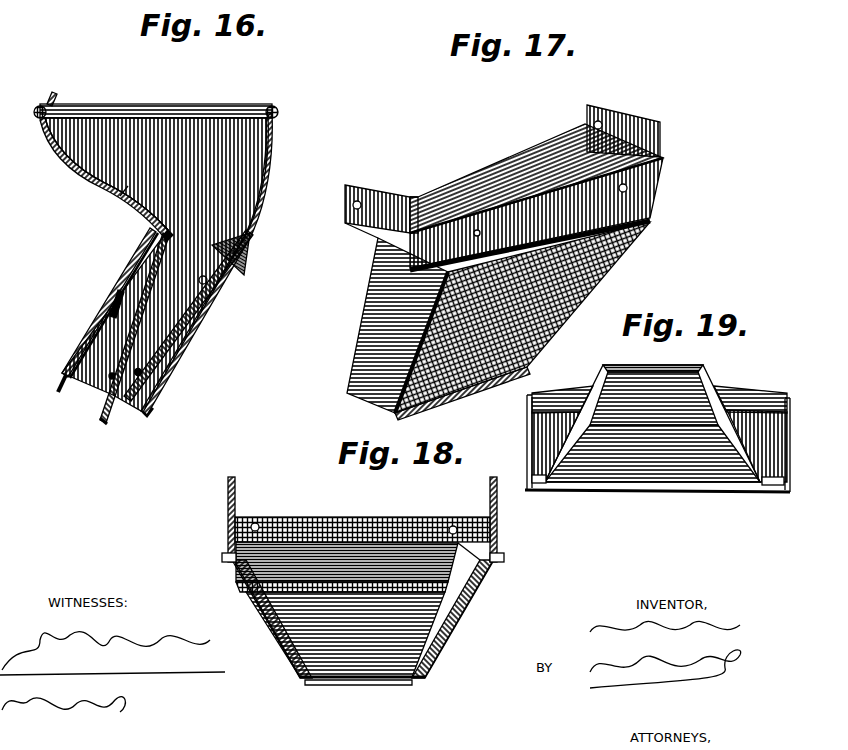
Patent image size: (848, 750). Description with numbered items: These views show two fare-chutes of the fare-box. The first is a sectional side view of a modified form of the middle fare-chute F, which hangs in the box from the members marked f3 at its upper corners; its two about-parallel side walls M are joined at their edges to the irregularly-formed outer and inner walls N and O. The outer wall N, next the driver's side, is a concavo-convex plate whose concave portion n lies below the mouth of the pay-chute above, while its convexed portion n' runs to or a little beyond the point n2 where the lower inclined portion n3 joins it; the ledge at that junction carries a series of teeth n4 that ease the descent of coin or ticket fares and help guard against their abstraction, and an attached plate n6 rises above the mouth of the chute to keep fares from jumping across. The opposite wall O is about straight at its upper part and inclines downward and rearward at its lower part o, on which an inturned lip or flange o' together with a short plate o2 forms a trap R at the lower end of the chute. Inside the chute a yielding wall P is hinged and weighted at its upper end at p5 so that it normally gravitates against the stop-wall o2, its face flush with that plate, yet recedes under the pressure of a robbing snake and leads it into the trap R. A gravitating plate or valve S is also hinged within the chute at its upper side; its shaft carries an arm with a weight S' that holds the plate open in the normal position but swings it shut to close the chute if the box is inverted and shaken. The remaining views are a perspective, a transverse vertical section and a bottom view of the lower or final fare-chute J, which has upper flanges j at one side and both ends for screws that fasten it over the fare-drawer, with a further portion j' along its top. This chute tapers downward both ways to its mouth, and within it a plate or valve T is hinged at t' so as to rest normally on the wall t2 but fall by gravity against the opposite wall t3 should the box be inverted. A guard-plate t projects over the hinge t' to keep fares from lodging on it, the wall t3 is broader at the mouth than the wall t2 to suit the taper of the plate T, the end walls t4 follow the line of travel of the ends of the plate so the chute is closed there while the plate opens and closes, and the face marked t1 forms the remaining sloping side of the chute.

In FIG. 16, the fare-chute F is at (156, 96).
In FIG. 16, the pivot pins of frame f3 is at (280, 110).
In FIG. 16, the attached plate n6 is at (56, 87).
In FIG. 16, the concave portion n is at (104, 177).
In FIG. 16, the convexed portion n' is at (138, 206).
In FIG. 16, the outer wall N is at (112, 202).
In FIG. 16, the point of junction n2 is at (158, 222).
In FIG. 16, the teeth n4 is at (180, 227).
In FIG. 16, the side walls M is at (156, 265).
In FIG. 16, the inner wall O is at (271, 162).
In FIG. 16, the weight p5 is at (247, 258).
In FIG. 16, the weight S' is at (101, 310).
In FIG. 16, the lower inclined portion n3 is at (108, 298).
In FIG. 16, the gravitating plate or valve S is at (134, 328).
In FIG. 16, the yielding wall P is at (180, 370).
In FIG. 16, the lower inclined part o is at (171, 331).
In FIG. 16, the short plate o2 is at (109, 377).
In FIG. 16, the trap R is at (150, 410).
In FIG. 16, the inturned lip or flange o' is at (115, 428).
In FIG. 17, the lower fare-chute J is at (536, 186).
In FIG. 19, the lower fare-chute J is at (657, 425).
In FIG. 18, the lower fare-chute J is at (363, 586).
In FIG. 17, the upper flanges j is at (496, 170).
In FIG. 19, the upper flanges j is at (645, 445).
In FIG. 18, the upper flanges j is at (357, 519).
In FIG. 17, the top cover plate j' is at (536, 178).
In FIG. 19, the top cover plate j' is at (659, 386).
In FIG. 18, the top cover plate j' is at (362, 517).
In FIG. 17, the hinge t' is at (497, 248).
In FIG. 19, the hinge t' is at (646, 495).
In FIG. 18, the hinge t' is at (362, 551).
In FIG. 17, the left funnel side t1 is at (397, 325).
In FIG. 17, the side or wall t2 is at (522, 317).
In FIG. 19, the side or wall t2 is at (652, 453).
In FIG. 17, the plate or valve T is at (452, 400).
In FIG. 19, the plate or valve T is at (654, 398).
In FIG. 18, the plate or valve T is at (345, 634).
In FIG. 19, the opposite wall t3 is at (652, 409).
In FIG. 19, the end walls t4 is at (659, 446).
In FIG. 18, the end walls t4 is at (363, 619).
In FIG. 18, the guard-plate t is at (358, 570).